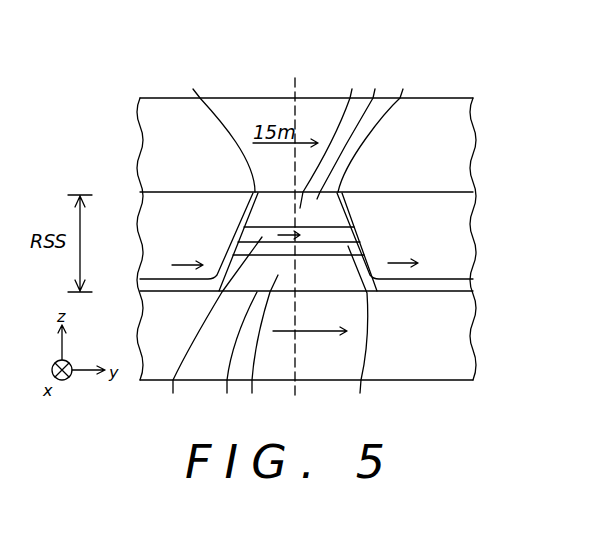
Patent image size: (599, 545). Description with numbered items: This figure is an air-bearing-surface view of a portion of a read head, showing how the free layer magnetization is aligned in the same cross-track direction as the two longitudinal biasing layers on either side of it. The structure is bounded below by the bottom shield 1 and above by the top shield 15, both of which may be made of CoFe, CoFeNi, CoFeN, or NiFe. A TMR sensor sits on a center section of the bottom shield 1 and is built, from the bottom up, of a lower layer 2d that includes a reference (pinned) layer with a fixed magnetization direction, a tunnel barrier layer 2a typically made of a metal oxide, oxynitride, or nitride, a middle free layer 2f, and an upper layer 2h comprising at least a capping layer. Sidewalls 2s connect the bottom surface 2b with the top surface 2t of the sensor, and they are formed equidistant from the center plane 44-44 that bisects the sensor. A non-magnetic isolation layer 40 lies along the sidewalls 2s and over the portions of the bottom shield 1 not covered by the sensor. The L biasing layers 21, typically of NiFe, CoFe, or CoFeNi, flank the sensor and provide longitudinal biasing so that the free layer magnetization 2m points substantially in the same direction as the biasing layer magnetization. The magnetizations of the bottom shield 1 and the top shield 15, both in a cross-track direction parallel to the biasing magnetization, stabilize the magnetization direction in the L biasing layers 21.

The bottom shield 1 is at (455, 328).
The top shield 15 is at (455, 142).
The L biasing layers 21 is at (148, 232).
The non-magnetic isolation layer 40 is at (146, 288).
The center plane 44 is at (295, 237).
The sidewalls 2s is at (302, 176).
The upper layer 2h is at (330, 135).
The top surface 2t is at (355, 130).
The free layer magnetization 2m is at (298, 240).
The middle free layer 2f is at (211, 327).
The bottom surface 2b is at (233, 354).
The lower layer 2d is at (259, 346).
The tunnel barrier layer 2a is at (355, 331).